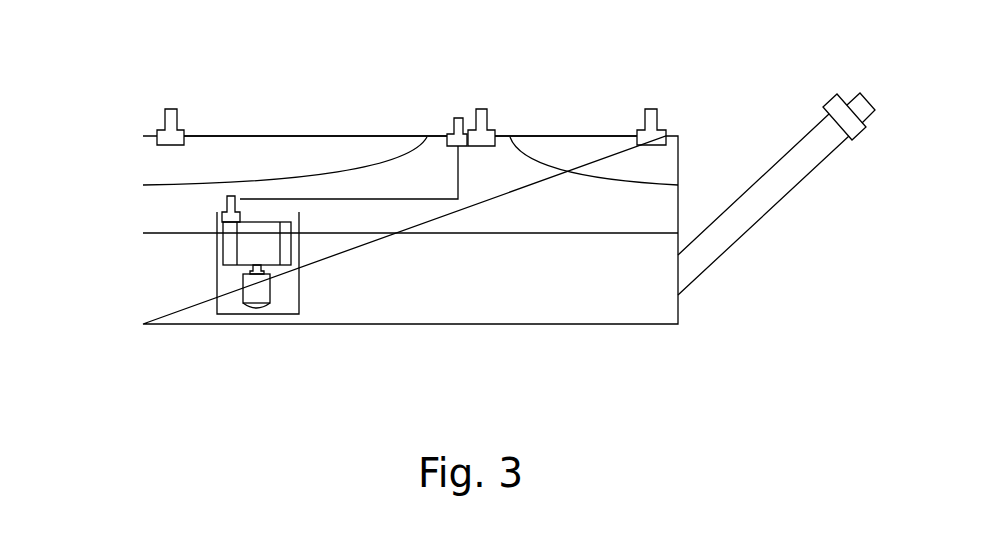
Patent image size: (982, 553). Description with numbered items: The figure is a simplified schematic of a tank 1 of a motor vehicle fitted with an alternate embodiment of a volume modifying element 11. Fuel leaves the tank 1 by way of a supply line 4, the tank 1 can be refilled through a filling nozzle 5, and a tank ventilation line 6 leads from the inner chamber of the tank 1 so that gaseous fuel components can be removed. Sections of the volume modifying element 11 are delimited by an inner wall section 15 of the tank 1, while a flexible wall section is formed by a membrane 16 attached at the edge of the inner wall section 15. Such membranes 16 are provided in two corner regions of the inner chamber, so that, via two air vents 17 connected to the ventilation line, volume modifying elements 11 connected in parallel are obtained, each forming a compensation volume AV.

The tank 1 is at (447, 324).
The supply line 4 is at (458, 118).
The filling nozzle 5 is at (768, 213).
The tank ventilation line 6 is at (481, 109).
The volume modifying element 11 is at (155, 161).
The inner wall section 15 is at (273, 136).
The membrane 16 is at (357, 168).
The air vent 17 is at (171, 108).